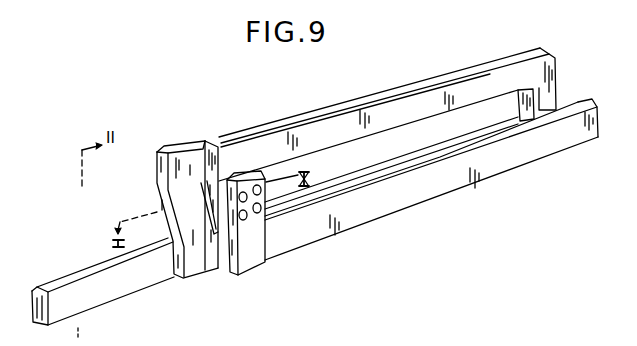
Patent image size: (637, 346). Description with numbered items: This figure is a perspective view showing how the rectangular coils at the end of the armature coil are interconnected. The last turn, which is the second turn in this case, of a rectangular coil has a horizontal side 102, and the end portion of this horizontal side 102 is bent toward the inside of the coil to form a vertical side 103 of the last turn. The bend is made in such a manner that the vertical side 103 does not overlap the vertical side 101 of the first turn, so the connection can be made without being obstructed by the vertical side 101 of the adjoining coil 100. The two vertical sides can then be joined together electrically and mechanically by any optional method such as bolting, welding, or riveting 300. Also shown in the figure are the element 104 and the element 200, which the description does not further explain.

The adjoining coil 100 is at (380, 159).
The vertical side of the first turn 101 is at (168, 209).
The horizontal side 102 is at (367, 125).
The vertical side of the last turn 103 is at (207, 182).
The perforated plate 104 is at (255, 224).
The beam 200 is at (393, 199).
The riveting 300 is at (245, 220).